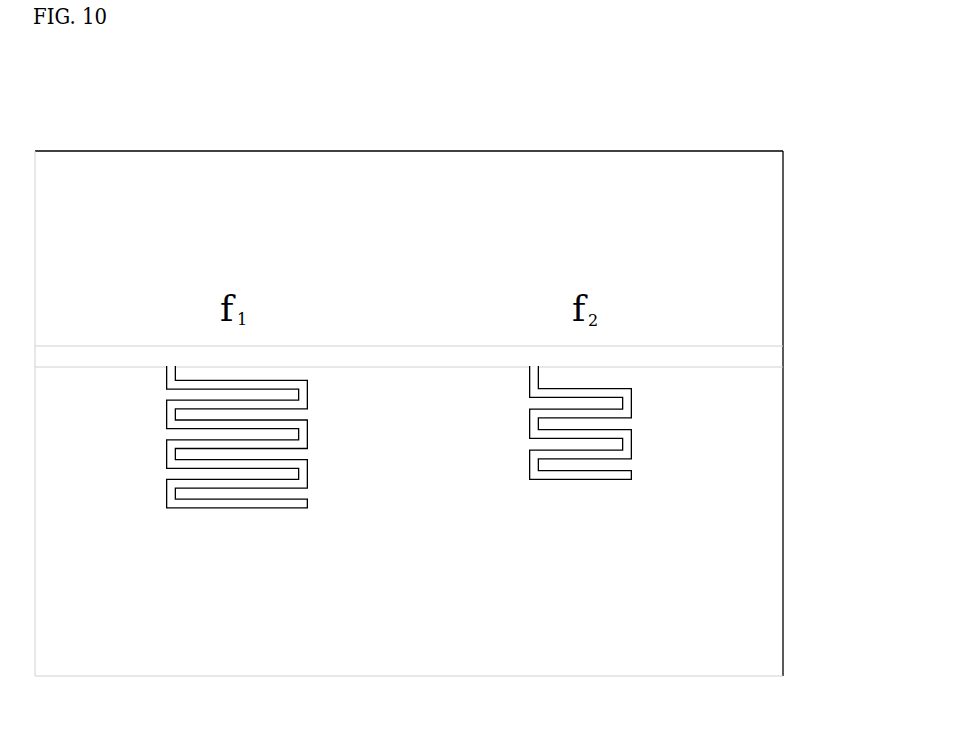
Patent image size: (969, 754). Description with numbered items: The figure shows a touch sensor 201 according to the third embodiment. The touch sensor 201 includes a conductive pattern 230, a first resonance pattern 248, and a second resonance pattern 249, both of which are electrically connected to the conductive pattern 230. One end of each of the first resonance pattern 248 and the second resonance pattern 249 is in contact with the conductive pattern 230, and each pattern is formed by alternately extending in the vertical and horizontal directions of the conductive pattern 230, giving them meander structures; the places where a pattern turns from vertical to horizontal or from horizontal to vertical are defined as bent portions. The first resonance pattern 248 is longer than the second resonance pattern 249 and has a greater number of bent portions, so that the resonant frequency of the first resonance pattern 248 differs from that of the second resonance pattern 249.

The touch sensor 201 is at (447, 93).
The conductive pattern 230 is at (755, 346).
The first resonance pattern 248 is at (238, 508).
The second resonance pattern 249 is at (583, 479).